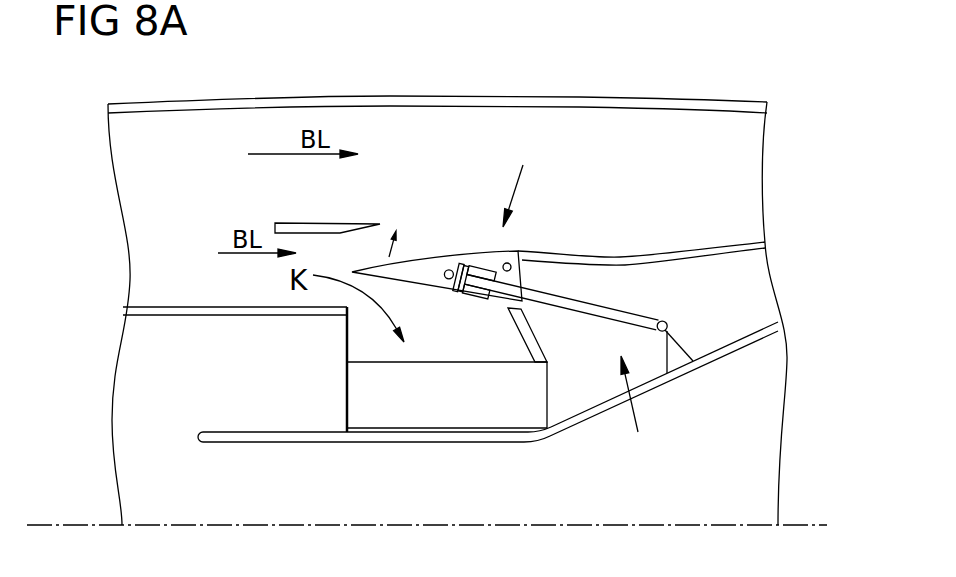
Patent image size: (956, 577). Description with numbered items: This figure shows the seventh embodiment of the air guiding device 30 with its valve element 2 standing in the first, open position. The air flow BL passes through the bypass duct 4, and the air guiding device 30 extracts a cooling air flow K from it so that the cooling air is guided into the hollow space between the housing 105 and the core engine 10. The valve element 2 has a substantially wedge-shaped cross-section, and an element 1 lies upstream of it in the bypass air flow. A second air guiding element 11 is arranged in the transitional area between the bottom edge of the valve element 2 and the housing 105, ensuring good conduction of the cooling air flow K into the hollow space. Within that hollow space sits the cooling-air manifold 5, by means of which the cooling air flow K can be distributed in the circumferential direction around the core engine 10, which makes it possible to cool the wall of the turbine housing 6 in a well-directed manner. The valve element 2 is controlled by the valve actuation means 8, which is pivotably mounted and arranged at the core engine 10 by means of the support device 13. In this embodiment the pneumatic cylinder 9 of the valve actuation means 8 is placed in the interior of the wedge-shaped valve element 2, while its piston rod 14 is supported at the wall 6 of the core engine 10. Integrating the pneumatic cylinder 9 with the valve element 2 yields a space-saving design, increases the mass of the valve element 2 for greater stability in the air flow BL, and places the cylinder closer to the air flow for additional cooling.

The upstream airfoil / vane 1 is at (336, 227).
The valve element 2 is at (420, 268).
The bypass duct 4 is at (650, 201).
The cooling-air manifold 5 is at (522, 388).
The wall of turbine housing 6 is at (660, 382).
The valve actuation means 8 is at (637, 408).
The pneumatic cylinder 9 is at (472, 264).
The core engine 10 is at (647, 492).
The second air guiding element 11 is at (532, 342).
The support device 13 is at (675, 357).
The piston rod 14 is at (610, 315).
The air guiding device 30 is at (527, 182).
The housing 105 is at (192, 309).